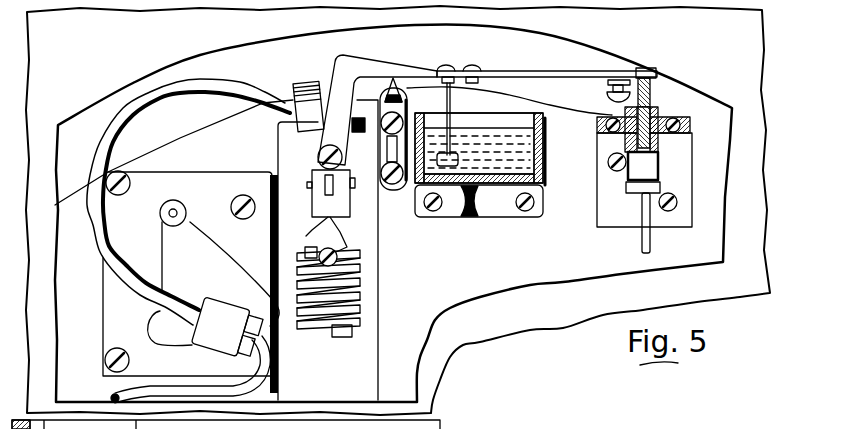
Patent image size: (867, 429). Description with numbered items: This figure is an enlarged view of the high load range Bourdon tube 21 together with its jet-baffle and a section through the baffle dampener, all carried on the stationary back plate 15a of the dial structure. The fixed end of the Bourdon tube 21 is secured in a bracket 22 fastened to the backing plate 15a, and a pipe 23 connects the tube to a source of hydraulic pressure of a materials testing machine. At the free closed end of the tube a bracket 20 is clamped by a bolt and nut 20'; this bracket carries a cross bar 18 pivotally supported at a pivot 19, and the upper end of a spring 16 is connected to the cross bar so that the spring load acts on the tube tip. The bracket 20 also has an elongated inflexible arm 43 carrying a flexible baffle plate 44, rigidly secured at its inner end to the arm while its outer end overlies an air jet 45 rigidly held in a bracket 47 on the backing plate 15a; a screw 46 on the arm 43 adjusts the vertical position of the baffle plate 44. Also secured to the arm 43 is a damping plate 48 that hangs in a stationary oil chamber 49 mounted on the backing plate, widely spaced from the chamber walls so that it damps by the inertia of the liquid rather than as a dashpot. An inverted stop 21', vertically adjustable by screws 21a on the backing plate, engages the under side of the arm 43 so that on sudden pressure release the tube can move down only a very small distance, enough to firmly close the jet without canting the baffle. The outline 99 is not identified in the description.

The back plate 15a is at (708, 178).
The spring 16 is at (360, 317).
The cross bar 18 is at (332, 215).
The pivot 19 is at (308, 197).
The bracket 20 is at (367, 110).
The bolt and nut 20' is at (365, 118).
The high load range Bourdon tube 21 is at (189, 201).
The inverted stop 21' is at (418, 67).
The screws 21a is at (392, 170).
The bracket 22 is at (200, 343).
The pipe 23 is at (120, 391).
The arm 43 is at (533, 80).
The flexible baffle plate 44 is at (587, 72).
The air jet 45 is at (651, 128).
The screw 46 is at (610, 90).
The bracket 47 is at (603, 155).
The damping plate 48 is at (551, 160).
The oil chamber 49 is at (547, 183).
The casing 99 is at (752, 220).